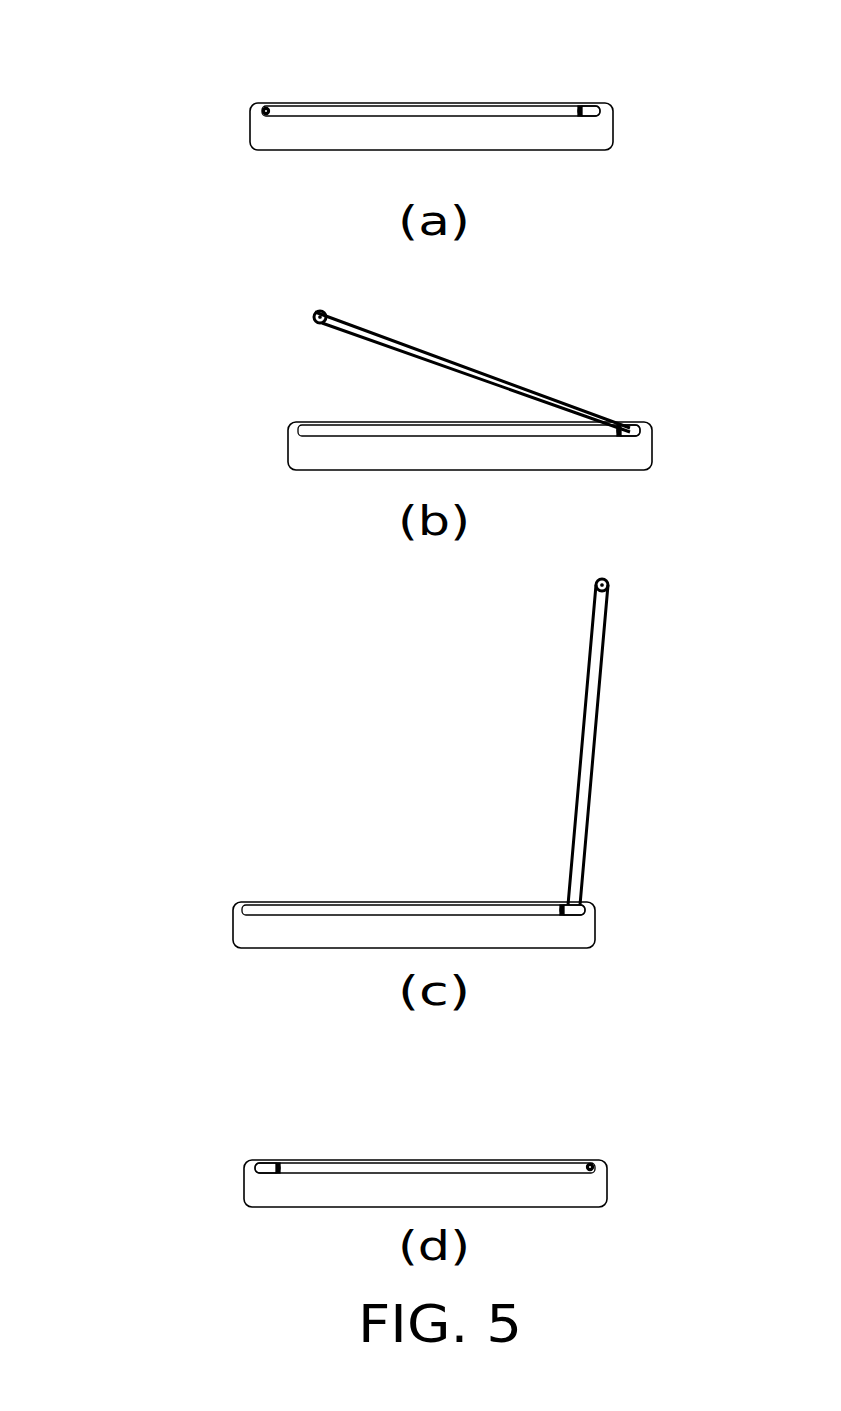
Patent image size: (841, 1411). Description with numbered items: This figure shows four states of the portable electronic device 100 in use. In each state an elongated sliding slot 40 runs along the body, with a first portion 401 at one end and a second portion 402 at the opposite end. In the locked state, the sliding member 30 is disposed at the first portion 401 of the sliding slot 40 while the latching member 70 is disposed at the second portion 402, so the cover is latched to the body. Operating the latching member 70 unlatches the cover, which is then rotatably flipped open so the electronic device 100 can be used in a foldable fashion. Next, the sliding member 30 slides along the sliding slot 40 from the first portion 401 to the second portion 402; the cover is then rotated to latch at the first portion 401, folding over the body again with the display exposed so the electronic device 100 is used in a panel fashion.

The portable electronic device 100 is at (222, 74).
The elongated sliding slot 40 is at (437, 108).
The sliding member 30 is at (590, 110).
The latching member 70 is at (268, 105).
The first portion 401 is at (574, 113).
The second portion 402 is at (282, 115).